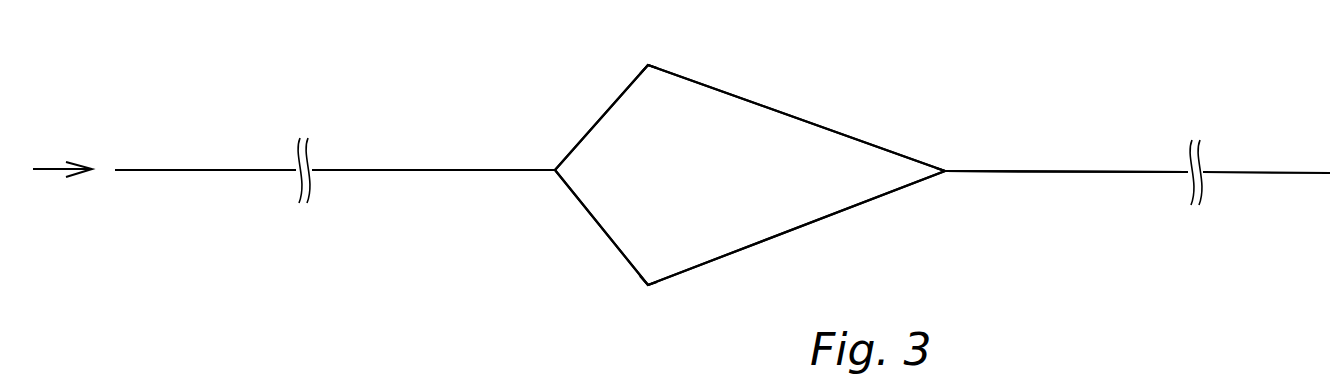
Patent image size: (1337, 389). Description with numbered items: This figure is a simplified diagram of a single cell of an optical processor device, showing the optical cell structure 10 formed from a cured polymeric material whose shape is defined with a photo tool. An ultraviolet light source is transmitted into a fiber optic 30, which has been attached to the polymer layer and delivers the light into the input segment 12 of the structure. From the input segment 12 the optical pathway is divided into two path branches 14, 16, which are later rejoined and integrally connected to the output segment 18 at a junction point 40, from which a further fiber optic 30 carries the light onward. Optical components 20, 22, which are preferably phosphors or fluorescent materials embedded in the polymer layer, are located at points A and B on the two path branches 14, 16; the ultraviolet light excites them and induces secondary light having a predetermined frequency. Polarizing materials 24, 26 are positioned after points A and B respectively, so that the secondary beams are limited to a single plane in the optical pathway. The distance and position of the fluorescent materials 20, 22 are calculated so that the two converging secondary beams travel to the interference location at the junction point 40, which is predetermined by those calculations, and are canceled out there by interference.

The optical cell structure 10 is at (836, 128).
The input segment 12 is at (498, 172).
The path branch 14 is at (594, 128).
The path branch 16 is at (607, 233).
The output segment 18 is at (1124, 170).
The optical component 20 is at (650, 68).
The optical component 22 is at (650, 282).
The polarizing material 24 is at (683, 72).
The polarizing material 26 is at (666, 282).
The fiber optic 30 is at (226, 172).
The junction point 40 is at (948, 170).